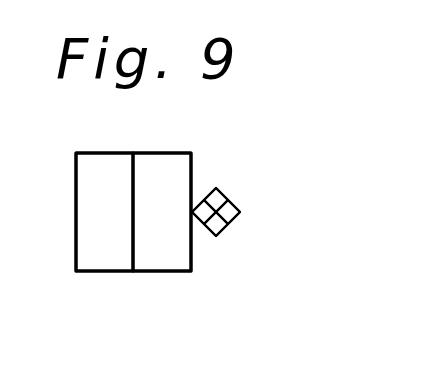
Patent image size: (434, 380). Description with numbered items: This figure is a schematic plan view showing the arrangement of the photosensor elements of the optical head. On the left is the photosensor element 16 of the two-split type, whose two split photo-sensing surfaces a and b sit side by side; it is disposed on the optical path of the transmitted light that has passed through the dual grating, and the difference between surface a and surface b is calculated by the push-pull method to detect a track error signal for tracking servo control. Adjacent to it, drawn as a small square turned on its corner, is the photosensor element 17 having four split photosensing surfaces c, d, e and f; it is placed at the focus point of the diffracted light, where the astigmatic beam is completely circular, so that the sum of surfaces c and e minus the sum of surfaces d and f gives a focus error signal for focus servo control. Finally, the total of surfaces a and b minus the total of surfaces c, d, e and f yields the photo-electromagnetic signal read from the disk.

The photosensor element 16 is at (122, 260).
The photosensor element 17 is at (240, 209).
The split photo-sensing surface a is at (104, 212).
The split photo-sensing surface b is at (162, 212).
The split photosensing surface c is at (213, 193).
The split photosensing surface d is at (203, 226).
The split photosensing surface e is at (222, 230).
The split photosensing surface f is at (233, 203).